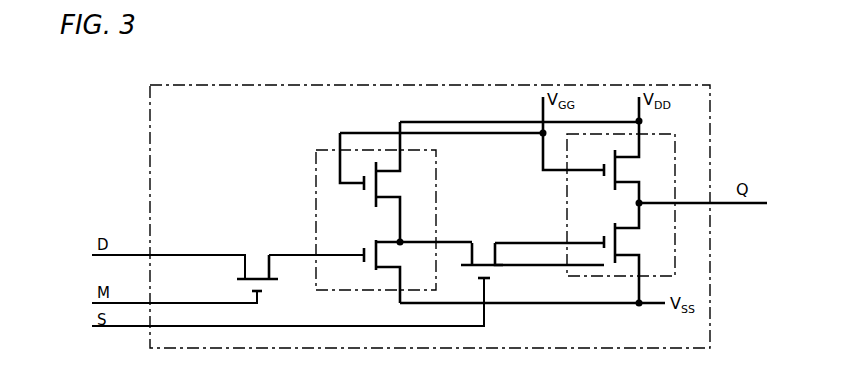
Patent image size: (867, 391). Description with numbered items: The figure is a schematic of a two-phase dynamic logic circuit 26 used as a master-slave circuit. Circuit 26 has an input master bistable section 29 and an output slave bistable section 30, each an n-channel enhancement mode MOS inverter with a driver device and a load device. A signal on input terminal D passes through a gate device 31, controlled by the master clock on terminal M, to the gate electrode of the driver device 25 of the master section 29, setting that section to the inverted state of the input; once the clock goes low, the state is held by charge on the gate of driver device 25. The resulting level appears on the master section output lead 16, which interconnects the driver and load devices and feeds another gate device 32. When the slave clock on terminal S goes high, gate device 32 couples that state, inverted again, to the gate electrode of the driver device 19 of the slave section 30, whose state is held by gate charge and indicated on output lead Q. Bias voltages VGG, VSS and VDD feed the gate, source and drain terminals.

The two-phase dynamic logic circuit 26 is at (260, 85).
The master bistable section 29 is at (316, 170).
The driver device 25 is at (375, 241).
The master section output lead 16 is at (416, 240).
The gate device 32 is at (481, 258).
The gate device 31 is at (257, 272).
The driver device 19 is at (613, 228).
The slave bistable section 30 is at (567, 268).